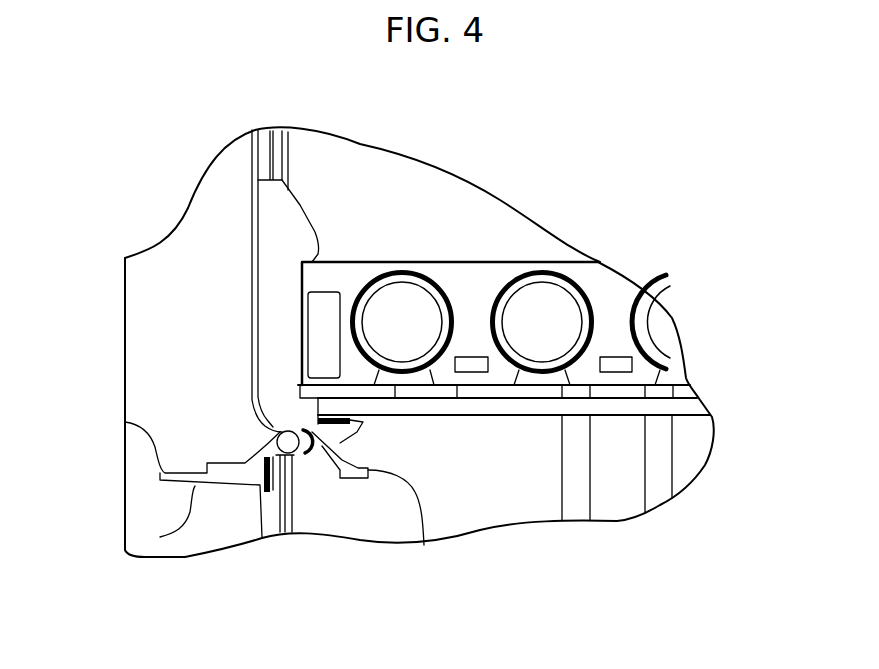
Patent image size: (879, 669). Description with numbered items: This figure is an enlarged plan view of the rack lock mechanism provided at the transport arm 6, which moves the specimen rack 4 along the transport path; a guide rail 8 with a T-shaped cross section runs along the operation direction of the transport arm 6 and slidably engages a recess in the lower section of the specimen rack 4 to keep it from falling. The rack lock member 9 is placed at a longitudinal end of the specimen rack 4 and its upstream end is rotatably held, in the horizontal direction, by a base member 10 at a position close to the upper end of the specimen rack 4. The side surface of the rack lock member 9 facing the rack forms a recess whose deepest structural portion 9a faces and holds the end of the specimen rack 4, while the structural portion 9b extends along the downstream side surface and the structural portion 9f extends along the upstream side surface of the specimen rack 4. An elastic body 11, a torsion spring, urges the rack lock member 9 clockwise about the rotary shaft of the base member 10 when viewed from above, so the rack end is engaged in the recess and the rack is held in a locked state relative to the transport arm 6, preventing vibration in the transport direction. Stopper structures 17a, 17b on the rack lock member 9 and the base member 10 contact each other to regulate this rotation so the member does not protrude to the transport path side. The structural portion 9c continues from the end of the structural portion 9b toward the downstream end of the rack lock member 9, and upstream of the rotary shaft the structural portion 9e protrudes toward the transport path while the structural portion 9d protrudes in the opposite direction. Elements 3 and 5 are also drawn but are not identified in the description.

The cylinder block 3 is at (656, 391).
The specimen rack 4 is at (468, 270).
The cylinder bore 5 is at (540, 273).
The transport arm 6 is at (507, 408).
The guide rail 8 is at (658, 462).
The rack lock member 9 is at (275, 216).
The structural portion 9a is at (297, 325).
The structural portion 9b is at (326, 248).
The structural portion 9c is at (301, 206).
The structural portion 9d is at (125, 422).
The structural portion 9e is at (424, 545).
The structural portion 9f is at (280, 429).
The base member 10 is at (299, 398).
The elastic body 11 is at (160, 537).
The stopper structure 17a is at (287, 532).
The stopper structure 17b is at (300, 480).